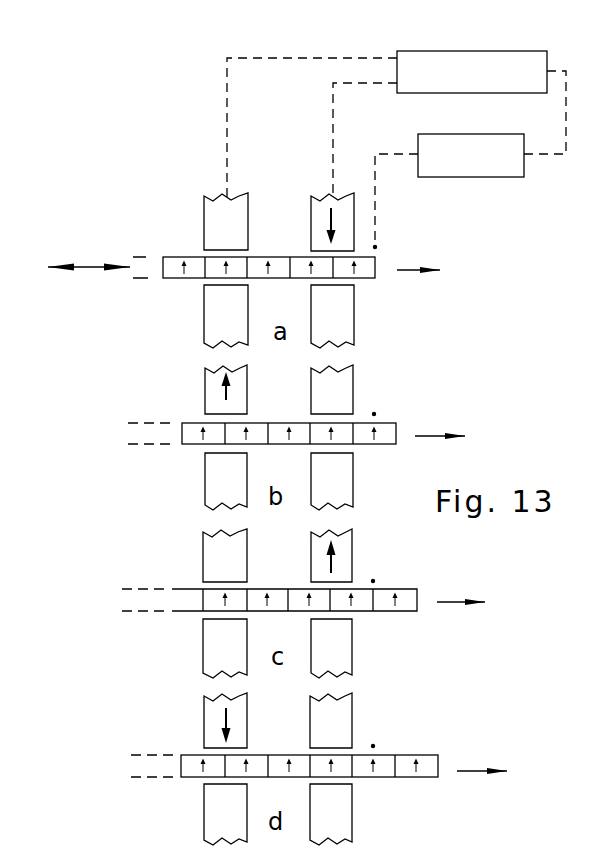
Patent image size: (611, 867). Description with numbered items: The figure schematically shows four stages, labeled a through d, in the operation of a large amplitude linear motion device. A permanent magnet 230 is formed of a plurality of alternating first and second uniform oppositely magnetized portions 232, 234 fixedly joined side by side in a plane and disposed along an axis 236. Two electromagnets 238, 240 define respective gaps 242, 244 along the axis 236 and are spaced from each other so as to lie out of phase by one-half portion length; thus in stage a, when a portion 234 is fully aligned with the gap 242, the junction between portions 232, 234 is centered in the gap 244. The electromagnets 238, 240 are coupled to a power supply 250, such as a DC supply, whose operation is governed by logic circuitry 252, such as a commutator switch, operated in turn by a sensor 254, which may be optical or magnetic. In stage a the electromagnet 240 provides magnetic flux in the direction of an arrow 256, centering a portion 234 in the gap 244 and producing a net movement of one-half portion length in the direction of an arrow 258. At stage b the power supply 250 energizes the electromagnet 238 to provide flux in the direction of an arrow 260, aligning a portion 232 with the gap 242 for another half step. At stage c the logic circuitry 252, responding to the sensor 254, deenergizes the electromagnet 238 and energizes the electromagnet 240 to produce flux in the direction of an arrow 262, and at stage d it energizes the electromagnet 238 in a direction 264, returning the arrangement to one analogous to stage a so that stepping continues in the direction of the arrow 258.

The permanent magnet 230 is at (162, 256).
The first uniform magnetized portion 232 is at (197, 271).
The second uniform magnetized portion 234 is at (212, 263).
The axis 236 is at (90, 266).
The electromagnet 238 is at (212, 205).
The electromagnet 240 is at (330, 197).
The gap 242 is at (212, 288).
The gap 244 is at (333, 277).
The power supply 250 is at (470, 51).
The logic circuitry 252 is at (470, 134).
The sensor 254 is at (380, 247).
The arrow 256 is at (331, 230).
The arrow 258 is at (413, 272).
The arrow 260 is at (221, 403).
The arrow 262 is at (332, 572).
The direction 264 is at (225, 716).